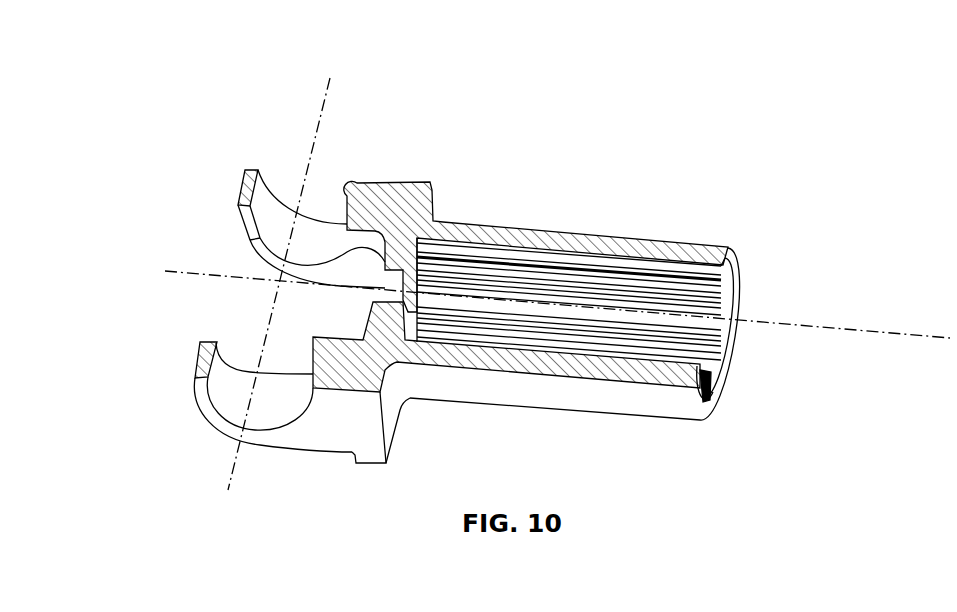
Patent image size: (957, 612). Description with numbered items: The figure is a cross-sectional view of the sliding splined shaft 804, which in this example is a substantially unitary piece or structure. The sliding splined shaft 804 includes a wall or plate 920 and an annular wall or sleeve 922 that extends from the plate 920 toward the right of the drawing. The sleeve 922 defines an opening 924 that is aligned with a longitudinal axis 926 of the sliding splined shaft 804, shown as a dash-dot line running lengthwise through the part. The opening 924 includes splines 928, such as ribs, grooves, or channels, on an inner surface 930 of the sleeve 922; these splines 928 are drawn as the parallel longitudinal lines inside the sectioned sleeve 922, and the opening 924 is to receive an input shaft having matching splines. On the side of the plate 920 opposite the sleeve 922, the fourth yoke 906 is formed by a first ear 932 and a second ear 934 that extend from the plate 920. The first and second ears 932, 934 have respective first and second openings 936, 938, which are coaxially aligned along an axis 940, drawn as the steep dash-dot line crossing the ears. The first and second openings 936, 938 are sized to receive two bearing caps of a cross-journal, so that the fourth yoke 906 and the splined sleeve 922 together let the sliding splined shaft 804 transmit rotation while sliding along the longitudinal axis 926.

The sliding splined shaft 804 is at (557, 240).
The fourth yoke 906 is at (197, 318).
The plate 920 is at (433, 203).
The sleeve 922 is at (582, 394).
The opening 924 is at (719, 375).
The longitudinal axis 926 is at (890, 338).
The splines 928 is at (723, 287).
The inner surface 930 is at (727, 270).
The first ear 932 is at (198, 398).
The second ear 934 is at (240, 217).
The first opening 936 is at (223, 418).
The second opening 938 is at (270, 168).
The axis 940 is at (322, 103).